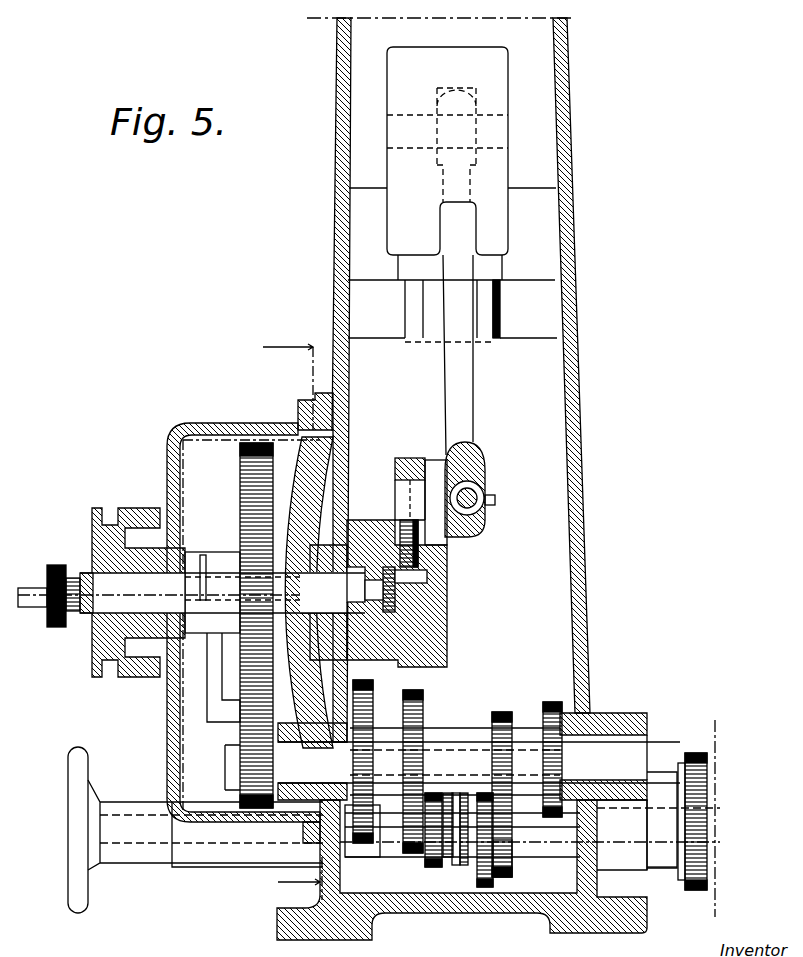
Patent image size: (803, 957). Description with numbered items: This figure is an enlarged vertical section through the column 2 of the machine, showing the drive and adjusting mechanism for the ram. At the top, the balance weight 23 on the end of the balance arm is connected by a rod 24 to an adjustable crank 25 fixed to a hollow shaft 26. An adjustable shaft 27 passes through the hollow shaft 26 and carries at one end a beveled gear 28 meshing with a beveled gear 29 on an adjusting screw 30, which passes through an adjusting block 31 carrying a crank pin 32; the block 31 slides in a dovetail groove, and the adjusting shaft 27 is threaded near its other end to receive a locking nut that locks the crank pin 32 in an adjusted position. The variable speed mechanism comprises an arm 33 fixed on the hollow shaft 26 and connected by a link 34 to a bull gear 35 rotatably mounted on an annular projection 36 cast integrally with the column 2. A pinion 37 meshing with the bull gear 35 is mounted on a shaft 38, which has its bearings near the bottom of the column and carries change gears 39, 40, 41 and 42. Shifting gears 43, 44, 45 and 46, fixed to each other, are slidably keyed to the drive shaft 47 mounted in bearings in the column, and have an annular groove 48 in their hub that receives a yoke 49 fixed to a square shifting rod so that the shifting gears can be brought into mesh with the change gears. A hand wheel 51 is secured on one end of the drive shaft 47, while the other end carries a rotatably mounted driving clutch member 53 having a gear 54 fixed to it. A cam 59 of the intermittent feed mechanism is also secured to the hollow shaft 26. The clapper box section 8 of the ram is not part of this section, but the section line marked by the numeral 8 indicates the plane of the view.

The column 2 is at (562, 268).
The clapper box section 8 is at (283, 619).
The balance weight 23 is at (498, 160).
The rod 24 is at (463, 377).
The adjustable crank 25 is at (447, 634).
The hollow shaft 26 is at (125, 632).
The adjustable shaft 27 is at (68, 626).
The beveled gear 28 is at (393, 592).
The beveled gear 29 is at (427, 576).
The adjusting screw 30 is at (447, 548).
The adjusting block 31 is at (412, 458).
The crank pin 32 is at (465, 478).
The arm 33 is at (203, 556).
The link 34 is at (210, 712).
The bull gear 35 is at (256, 445).
The annular projection 36 is at (312, 530).
The pinion 37 is at (256, 752).
The shaft 38 is at (665, 722).
The change gear 39 is at (373, 702).
The change gear 40 is at (423, 706).
The change gear 41 is at (502, 713).
The change gear 42 is at (548, 703).
The shifting gear 43 is at (433, 851).
The shifting gear 44 is at (448, 860).
The shifting gear 45 is at (494, 883).
The shifting gear 46 is at (512, 857).
The drive shaft 47 is at (386, 852).
The annular groove 48 is at (456, 868).
The yoke 49 is at (464, 868).
The hand wheel 51 is at (84, 912).
The driving clutch member 53 is at (708, 852).
The gear 54 is at (696, 892).
The cam 59 is at (148, 676).